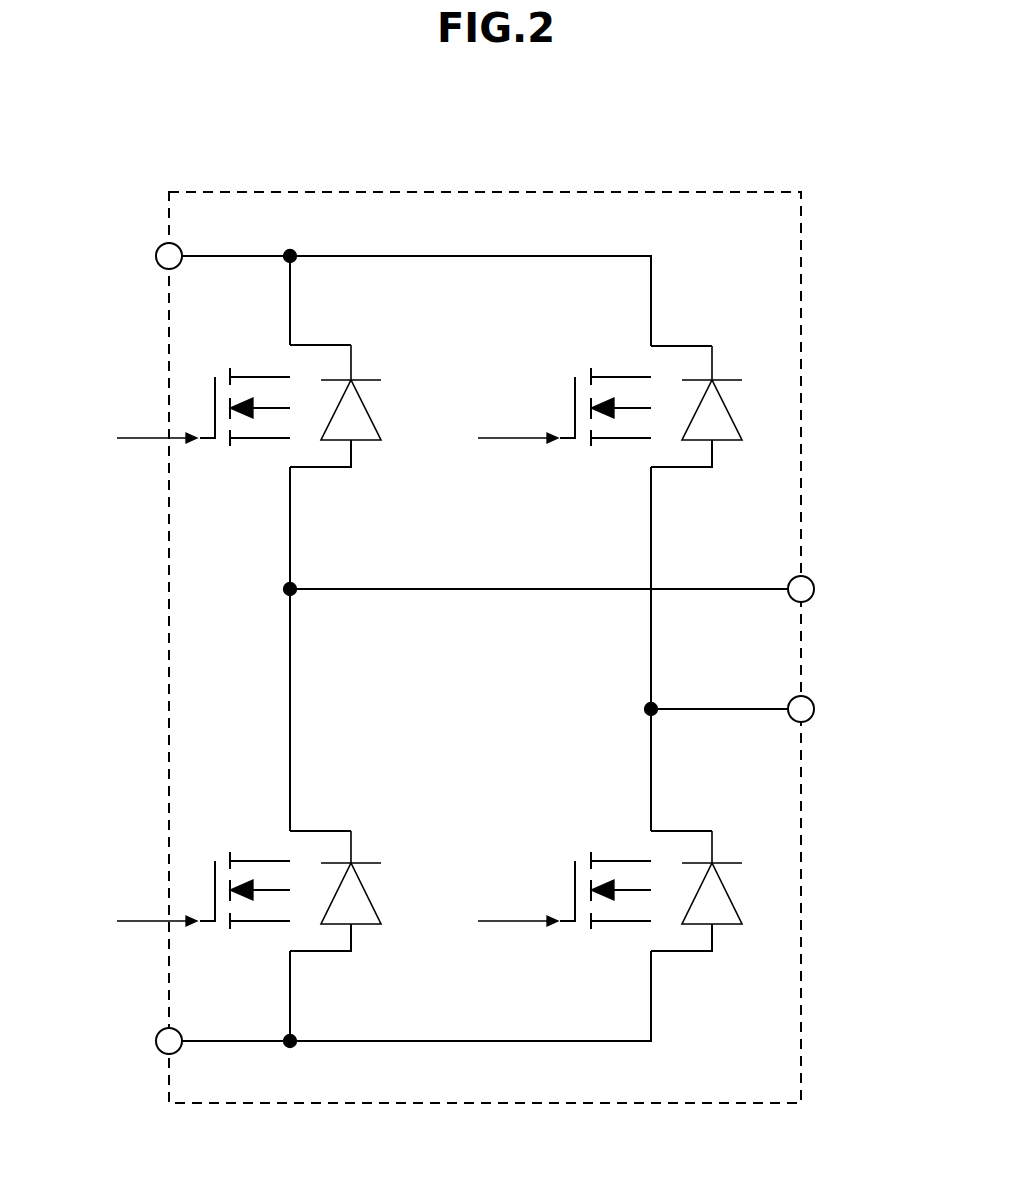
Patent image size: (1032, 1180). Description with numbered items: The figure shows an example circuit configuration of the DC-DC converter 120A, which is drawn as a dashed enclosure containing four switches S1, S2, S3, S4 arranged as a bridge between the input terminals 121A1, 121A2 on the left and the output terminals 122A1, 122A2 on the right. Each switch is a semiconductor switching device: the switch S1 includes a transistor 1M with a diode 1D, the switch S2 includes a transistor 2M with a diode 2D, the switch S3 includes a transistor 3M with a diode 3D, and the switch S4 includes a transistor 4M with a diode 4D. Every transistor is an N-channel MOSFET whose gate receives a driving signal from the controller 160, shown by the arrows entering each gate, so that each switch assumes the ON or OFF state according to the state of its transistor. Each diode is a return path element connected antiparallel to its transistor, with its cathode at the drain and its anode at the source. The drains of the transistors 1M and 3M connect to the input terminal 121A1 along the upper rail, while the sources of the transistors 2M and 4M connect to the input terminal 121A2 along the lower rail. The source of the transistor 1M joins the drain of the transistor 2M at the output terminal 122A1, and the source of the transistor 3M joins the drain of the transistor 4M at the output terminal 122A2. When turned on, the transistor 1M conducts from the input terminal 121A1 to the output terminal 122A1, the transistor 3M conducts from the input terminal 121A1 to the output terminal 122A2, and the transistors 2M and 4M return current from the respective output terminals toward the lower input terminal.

The DC-DC converter 120A is at (632, 192).
The input terminal 121A1 is at (160, 247).
The input terminal 121A2 is at (160, 1051).
The output terminal 122A1 is at (811, 580).
The output terminal 122A2 is at (811, 718).
The switch S1 is at (298, 414).
The switch S2 is at (298, 898).
The switch S3 is at (659, 414).
The switch S4 is at (657, 898).
The transistor 1M is at (248, 445).
The diode 1D is at (360, 445).
The transistor 2M is at (248, 929).
The diode 2D is at (360, 929).
The transistor 3M is at (609, 445).
The diode 3D is at (721, 445).
The transistor 4M is at (609, 929).
The diode 4D is at (721, 929).
The controller 160 is at (294, 680).